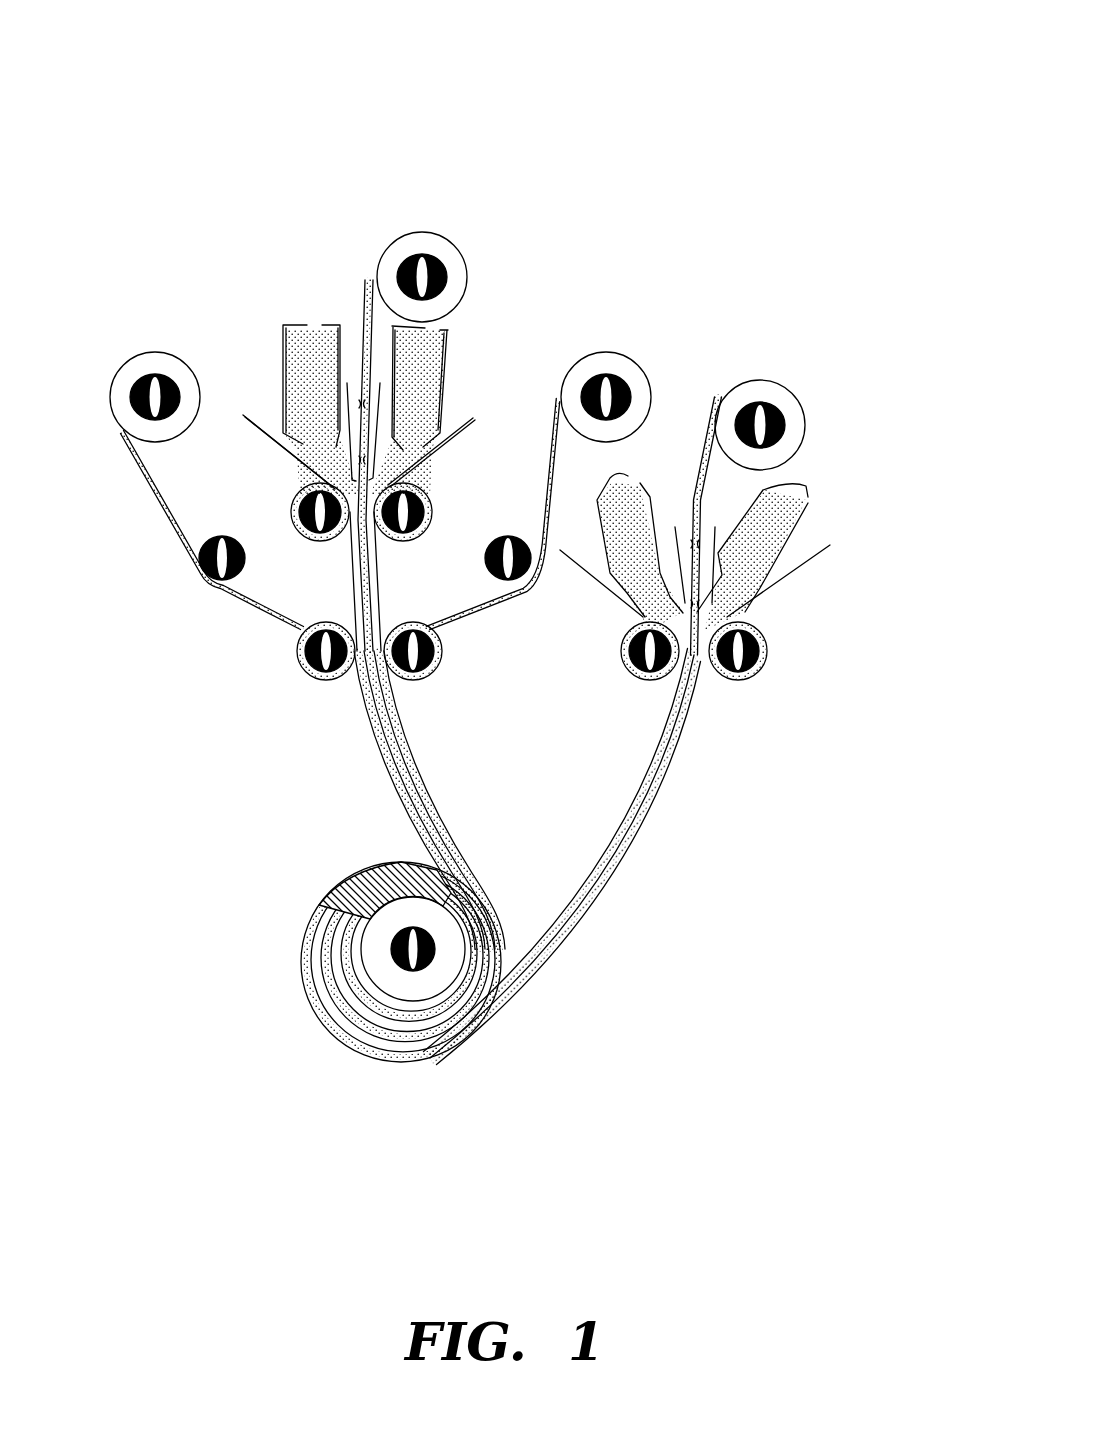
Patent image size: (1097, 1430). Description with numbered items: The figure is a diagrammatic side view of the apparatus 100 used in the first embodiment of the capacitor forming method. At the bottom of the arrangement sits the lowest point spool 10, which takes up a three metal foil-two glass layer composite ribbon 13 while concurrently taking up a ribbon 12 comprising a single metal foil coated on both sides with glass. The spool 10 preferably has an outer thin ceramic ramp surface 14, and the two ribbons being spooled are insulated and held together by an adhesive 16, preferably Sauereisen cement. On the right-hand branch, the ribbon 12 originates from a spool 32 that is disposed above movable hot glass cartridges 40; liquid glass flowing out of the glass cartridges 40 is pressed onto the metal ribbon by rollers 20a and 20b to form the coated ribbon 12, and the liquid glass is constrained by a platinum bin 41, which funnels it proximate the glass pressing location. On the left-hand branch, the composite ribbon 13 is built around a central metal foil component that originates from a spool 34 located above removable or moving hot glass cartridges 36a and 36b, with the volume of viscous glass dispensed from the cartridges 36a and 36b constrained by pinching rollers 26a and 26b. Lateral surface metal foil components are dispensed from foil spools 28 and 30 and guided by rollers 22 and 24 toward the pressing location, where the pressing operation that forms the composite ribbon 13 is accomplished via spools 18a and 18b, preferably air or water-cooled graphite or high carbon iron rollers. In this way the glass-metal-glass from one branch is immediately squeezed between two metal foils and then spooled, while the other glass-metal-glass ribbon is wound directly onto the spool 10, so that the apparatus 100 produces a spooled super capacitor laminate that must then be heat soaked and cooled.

The apparatus 100 is at (787, 124).
The lowest point spool 10 is at (372, 987).
The ribbon 12 is at (636, 866).
The composite ribbon 13 is at (422, 806).
The ceramic ramp surface 14 is at (327, 890).
The adhesive 16 is at (327, 898).
The spool 18a is at (307, 673).
The spool 18b is at (428, 678).
The roller 20a is at (648, 686).
The roller 20b is at (740, 686).
The roller 22 is at (212, 534).
The roller 24 is at (505, 533).
The pinching roller 26a is at (327, 541).
The pinching roller 26b is at (417, 541).
The foil spool 28 is at (140, 353).
The foil spool 30 is at (641, 372).
The spool 32 is at (800, 392).
The spool 34 is at (398, 232).
The hot glass cartridge 36a is at (282, 342).
The hot glass cartridge 36b is at (447, 348).
The hot glass cartridge 40 is at (643, 485).
The platinum bin 41 is at (581, 578).